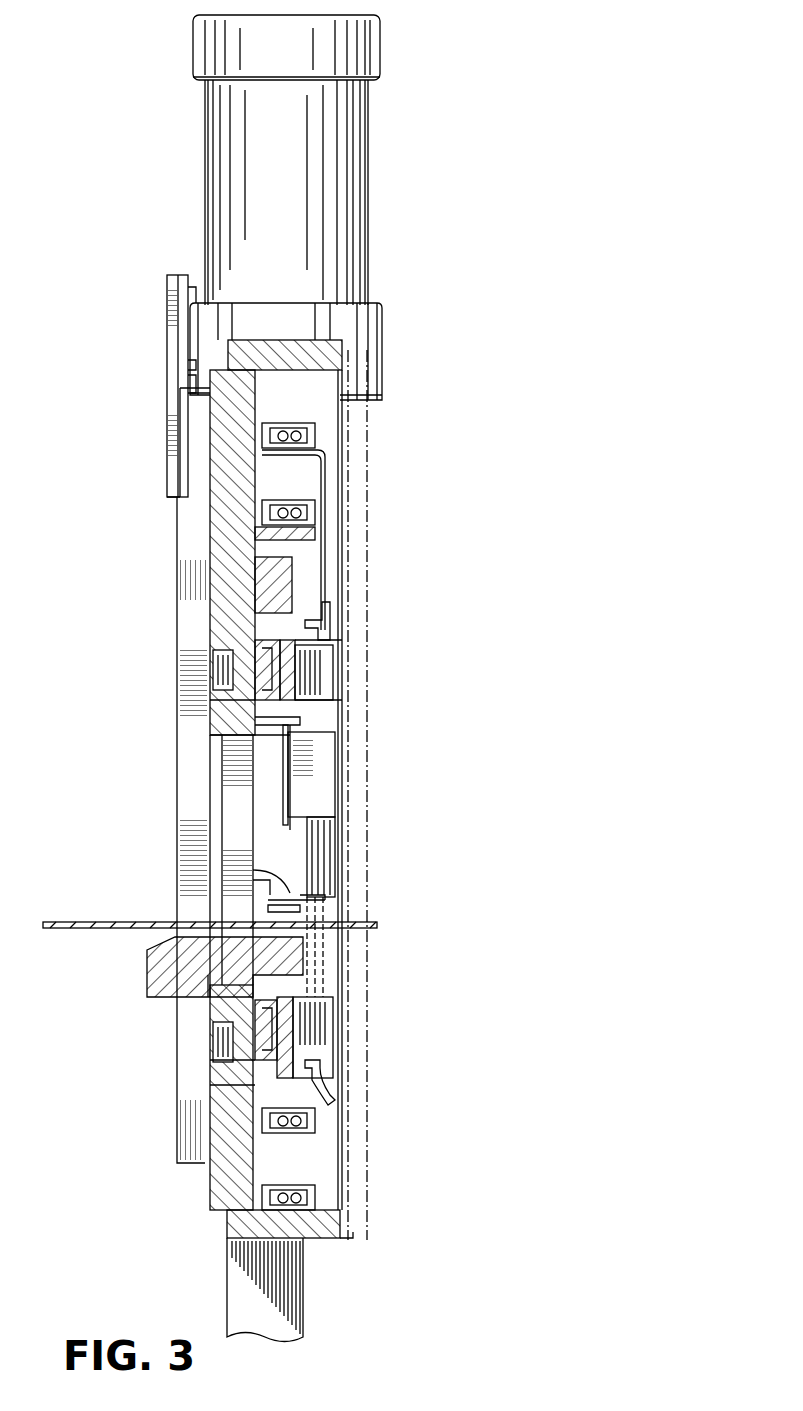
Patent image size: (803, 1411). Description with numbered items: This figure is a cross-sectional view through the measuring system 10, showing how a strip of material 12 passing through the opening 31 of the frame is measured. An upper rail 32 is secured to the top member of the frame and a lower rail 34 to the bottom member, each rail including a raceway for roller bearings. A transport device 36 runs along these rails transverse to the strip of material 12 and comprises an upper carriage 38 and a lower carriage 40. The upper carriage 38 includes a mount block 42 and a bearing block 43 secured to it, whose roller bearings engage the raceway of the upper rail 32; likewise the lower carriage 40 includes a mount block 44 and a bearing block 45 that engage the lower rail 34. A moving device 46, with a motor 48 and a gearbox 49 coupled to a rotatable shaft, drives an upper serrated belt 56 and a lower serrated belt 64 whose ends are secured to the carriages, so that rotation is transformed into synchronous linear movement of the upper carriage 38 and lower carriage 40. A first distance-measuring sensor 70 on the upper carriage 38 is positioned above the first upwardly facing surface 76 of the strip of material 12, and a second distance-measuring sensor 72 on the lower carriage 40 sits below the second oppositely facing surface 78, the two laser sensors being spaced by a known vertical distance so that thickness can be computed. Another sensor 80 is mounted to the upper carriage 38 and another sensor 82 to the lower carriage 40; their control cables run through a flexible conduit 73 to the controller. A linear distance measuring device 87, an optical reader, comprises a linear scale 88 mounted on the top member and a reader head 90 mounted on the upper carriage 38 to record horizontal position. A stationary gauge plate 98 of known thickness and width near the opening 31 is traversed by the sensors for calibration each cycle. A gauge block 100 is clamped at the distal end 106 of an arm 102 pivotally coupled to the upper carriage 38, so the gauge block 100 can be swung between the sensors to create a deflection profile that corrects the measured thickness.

The system 10 is at (505, 110).
The strip of material 12 is at (72, 938).
The opening 31 is at (268, 745).
The upper rail 32 is at (265, 690).
The lower rail 34 is at (270, 1050).
The transport device 36 is at (378, 648).
The upper carriage 38 is at (270, 640).
The lower carriage 40 is at (160, 997).
The mount block 42 is at (270, 725).
The bearing block 43 is at (285, 675).
The mount block 44 is at (268, 1080).
The bearing block 45 is at (285, 1030).
The moving device 46 is at (175, 52).
The motor 48 is at (368, 185).
The gearbox 49 is at (382, 332).
The upper serrated belt 56 is at (220, 665).
The lower serrated belt 64 is at (220, 1039).
The first distance-measuring sensor 70 is at (320, 775).
The second distance-measuring sensor 72 is at (322, 1072).
The flexible conduit 73 is at (317, 436).
The first upwardly facing surface 76 is at (100, 922).
The second oppositely facing surface 78 is at (112, 928).
The sensor 80 is at (320, 672).
The sensor 82 is at (320, 1012).
The linear distance measuring device 87 is at (300, 592).
The linear scale 88 is at (295, 562).
The reader head 90 is at (315, 605).
The stationary gauge plate 98 is at (275, 885).
The gauge block 100 is at (290, 893).
The arm 102 is at (325, 852).
The distal end 106 is at (320, 908).